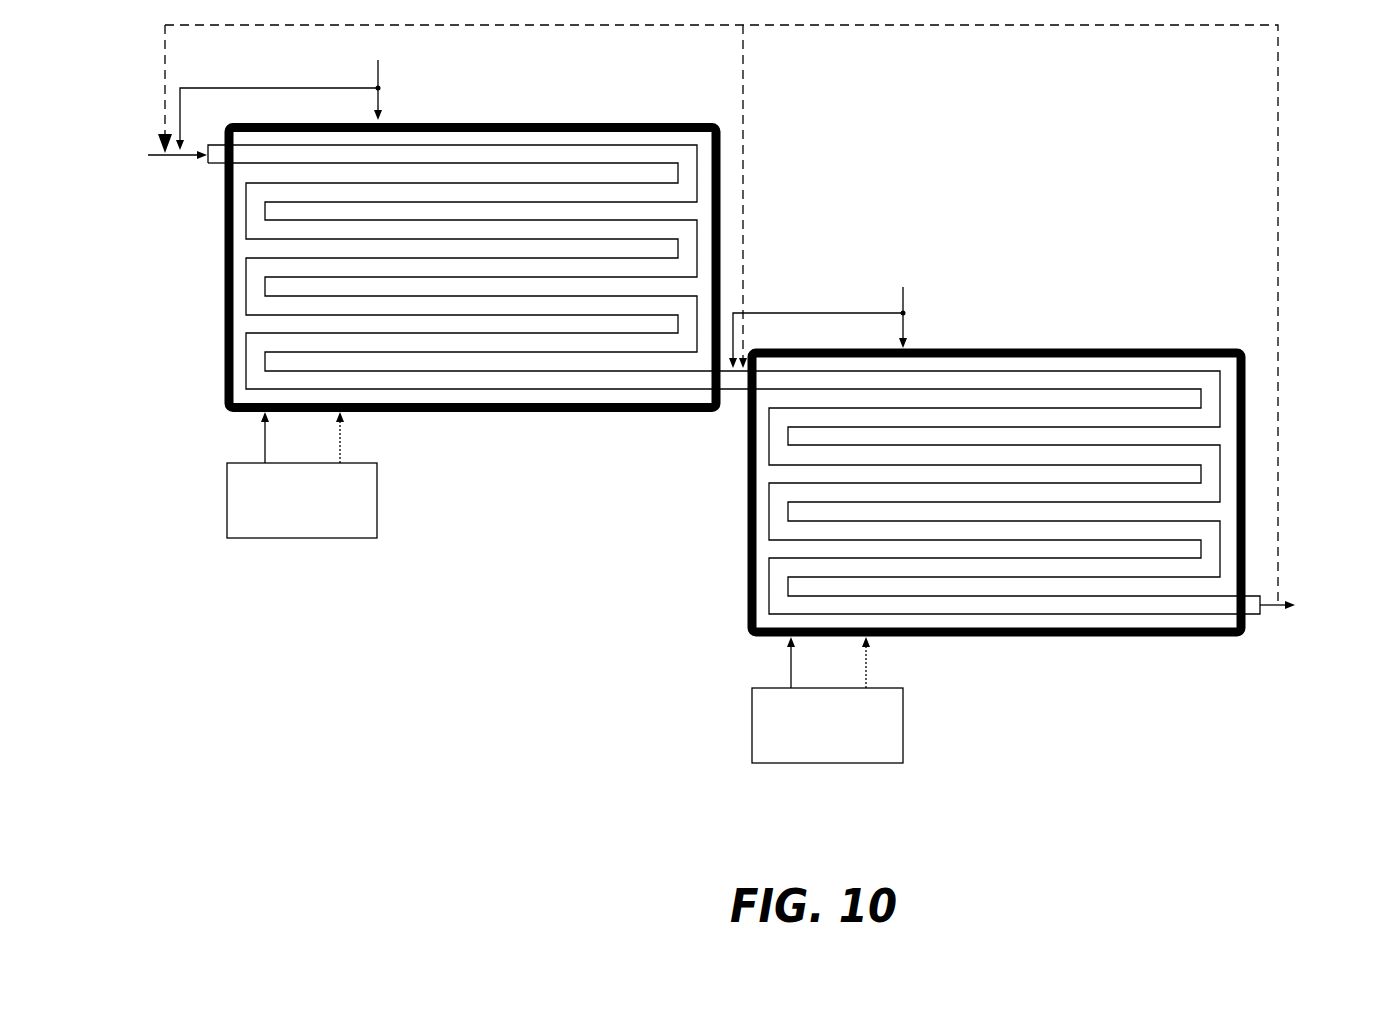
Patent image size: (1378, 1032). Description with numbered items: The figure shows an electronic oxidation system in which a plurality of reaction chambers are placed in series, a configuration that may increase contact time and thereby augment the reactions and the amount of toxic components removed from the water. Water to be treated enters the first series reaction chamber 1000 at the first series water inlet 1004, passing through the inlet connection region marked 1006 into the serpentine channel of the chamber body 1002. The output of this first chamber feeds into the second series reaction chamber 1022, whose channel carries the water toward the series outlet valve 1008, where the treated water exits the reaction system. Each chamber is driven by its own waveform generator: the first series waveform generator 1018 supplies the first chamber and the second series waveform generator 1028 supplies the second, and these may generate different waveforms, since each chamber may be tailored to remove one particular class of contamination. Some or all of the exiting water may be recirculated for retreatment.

The first series reaction chamber 1000 is at (533, 83).
The first serpentine reactor 1002 is at (433, 121).
The first series water inlet 1004 is at (213, 147).
The inlet channel connection 1006 is at (207, 165).
The series outlet valve 1008 is at (1260, 597).
The first series waveform generator 1018 is at (380, 500).
The second series reaction chamber 1022 is at (960, 349).
The second series waveform generator 1028 is at (905, 725).